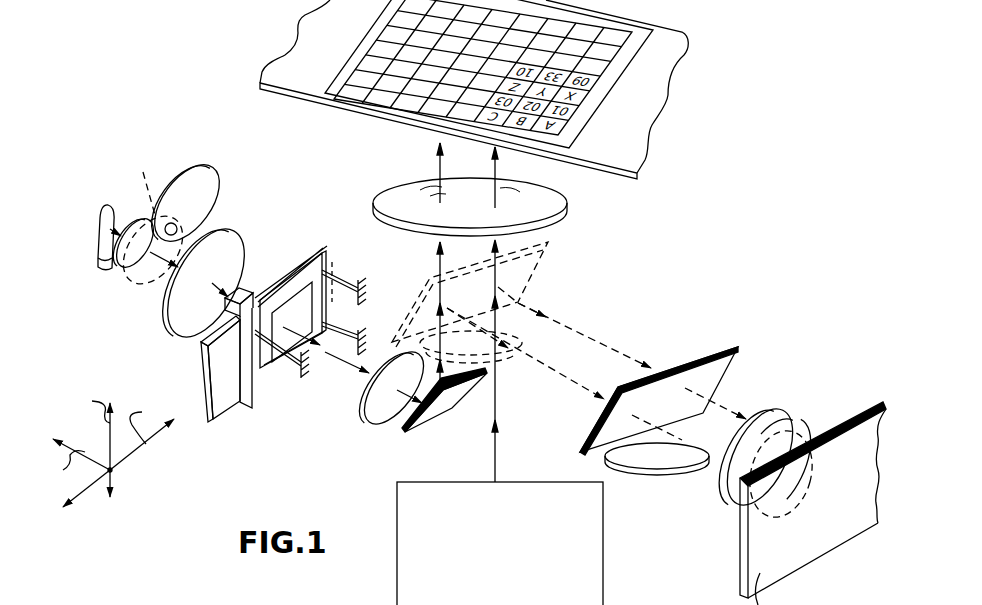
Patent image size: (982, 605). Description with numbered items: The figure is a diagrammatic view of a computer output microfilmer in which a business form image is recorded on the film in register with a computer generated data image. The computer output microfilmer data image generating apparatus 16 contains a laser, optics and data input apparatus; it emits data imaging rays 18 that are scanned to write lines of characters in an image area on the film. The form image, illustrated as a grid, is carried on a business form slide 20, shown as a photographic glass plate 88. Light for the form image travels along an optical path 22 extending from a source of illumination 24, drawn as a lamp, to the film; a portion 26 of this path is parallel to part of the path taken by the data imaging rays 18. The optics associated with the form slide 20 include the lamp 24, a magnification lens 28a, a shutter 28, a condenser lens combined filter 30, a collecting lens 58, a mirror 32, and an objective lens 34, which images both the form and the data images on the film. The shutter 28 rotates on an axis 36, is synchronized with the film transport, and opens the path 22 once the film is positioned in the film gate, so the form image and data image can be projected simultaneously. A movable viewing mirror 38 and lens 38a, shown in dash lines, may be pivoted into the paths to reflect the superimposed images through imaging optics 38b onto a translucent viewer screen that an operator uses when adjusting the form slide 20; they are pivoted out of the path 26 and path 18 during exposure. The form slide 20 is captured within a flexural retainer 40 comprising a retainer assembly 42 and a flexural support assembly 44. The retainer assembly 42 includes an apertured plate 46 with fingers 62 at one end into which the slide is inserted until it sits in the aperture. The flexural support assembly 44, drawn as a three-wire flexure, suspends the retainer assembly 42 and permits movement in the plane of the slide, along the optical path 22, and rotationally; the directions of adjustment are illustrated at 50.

The computer output microfilmer data image generating apparatus 16 is at (604, 562).
The data imaging rays 18 is at (503, 458).
The business form slide 20 is at (199, 376).
The optical path 22 is at (370, 400).
The source of illumination 24 is at (97, 237).
The portion of the optical path 26 is at (438, 168).
The shutter 28 is at (174, 184).
The magnification lens 28a is at (117, 277).
The condenser lens combined filter 30 is at (230, 232).
The mirror 32 is at (412, 430).
The objective lens 34 is at (395, 192).
The axis 36 is at (177, 227).
The movable viewing mirror 38 is at (525, 272).
The lens 38a is at (497, 372).
The imaging optics 38b is at (728, 510).
The flexural retainer 40 is at (245, 422).
The retainer assembly 42 is at (332, 260).
The flexural support assembly 44 is at (342, 272).
The apertured plate 46 is at (259, 377).
The directions of adjustment 50 is at (113, 476).
The collecting lens 58 is at (367, 420).
The fingers 62 is at (247, 288).
The photographic glass plate 88 is at (297, 287).